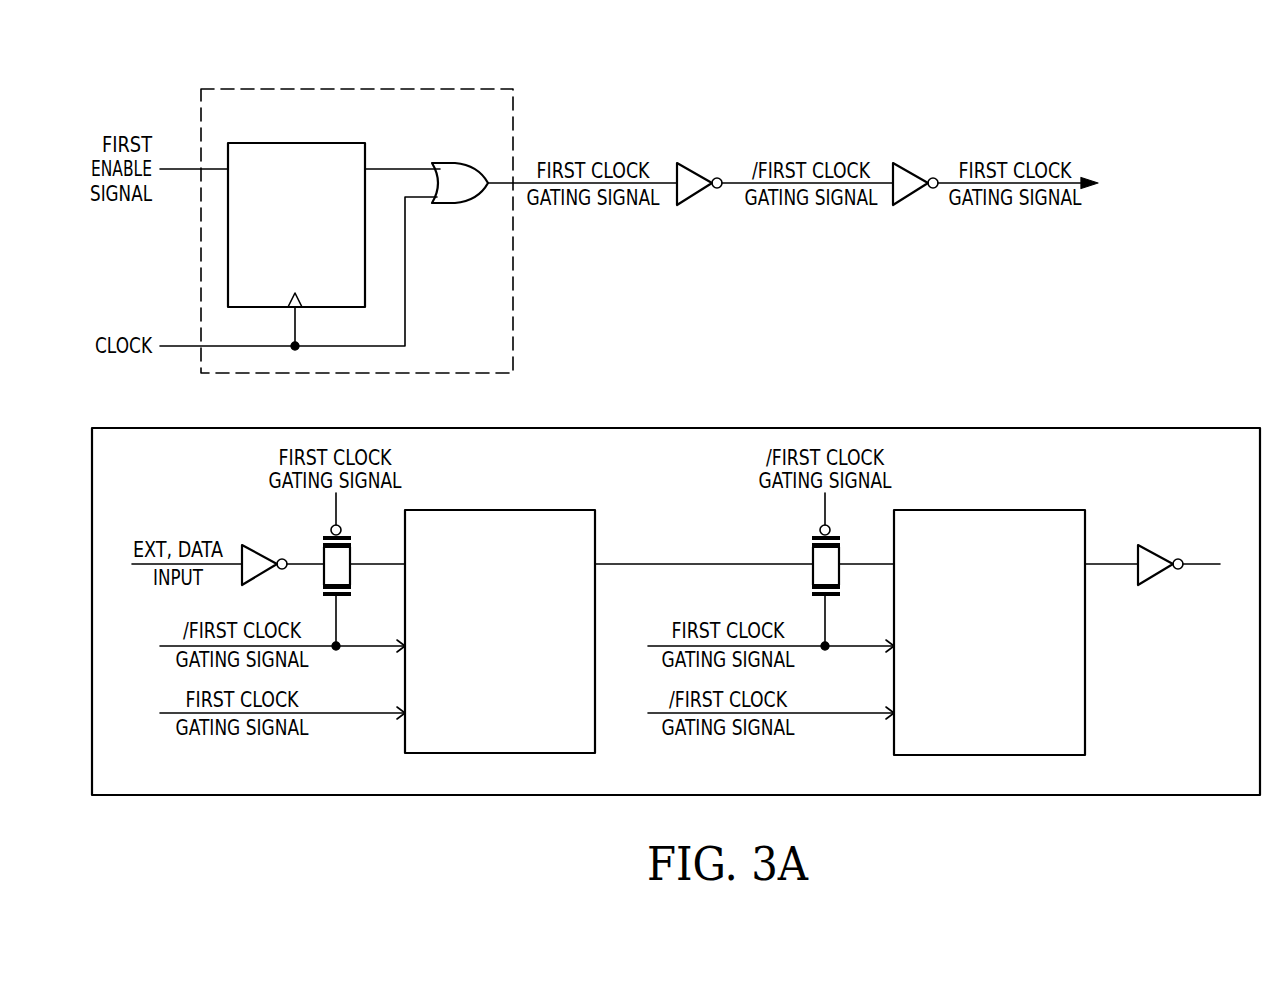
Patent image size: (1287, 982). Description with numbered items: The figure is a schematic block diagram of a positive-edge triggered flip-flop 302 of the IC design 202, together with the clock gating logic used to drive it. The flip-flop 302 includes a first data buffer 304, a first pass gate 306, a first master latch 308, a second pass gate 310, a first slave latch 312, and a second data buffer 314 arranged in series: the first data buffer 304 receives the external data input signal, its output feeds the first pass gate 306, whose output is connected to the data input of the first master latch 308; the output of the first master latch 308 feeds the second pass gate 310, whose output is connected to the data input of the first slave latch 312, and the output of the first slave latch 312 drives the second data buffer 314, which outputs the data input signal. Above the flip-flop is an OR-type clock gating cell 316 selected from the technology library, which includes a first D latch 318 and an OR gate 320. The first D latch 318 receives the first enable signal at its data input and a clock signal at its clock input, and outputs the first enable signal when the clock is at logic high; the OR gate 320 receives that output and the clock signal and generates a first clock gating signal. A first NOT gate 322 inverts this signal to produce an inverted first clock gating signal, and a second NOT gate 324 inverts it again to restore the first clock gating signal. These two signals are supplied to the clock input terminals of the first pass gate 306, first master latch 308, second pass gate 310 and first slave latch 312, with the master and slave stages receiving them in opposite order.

The IC design 202 is at (1150, 122).
The positive-edge triggered flip-flop 302 is at (1101, 428).
The first data buffer 304 is at (256, 550).
The first pass gate 306 is at (352, 592).
The first master latch 308 is at (496, 510).
The second pass gate 310 is at (841, 592).
The first slave latch 312 is at (986, 510).
The second data buffer 314 is at (1153, 550).
The OR-type clock gating cell 316 is at (365, 89).
The first D latch 318 is at (295, 143).
The OR gate 320 is at (461, 163).
The first NOT gate 322 is at (691, 170).
The second NOT gate 324 is at (908, 170).